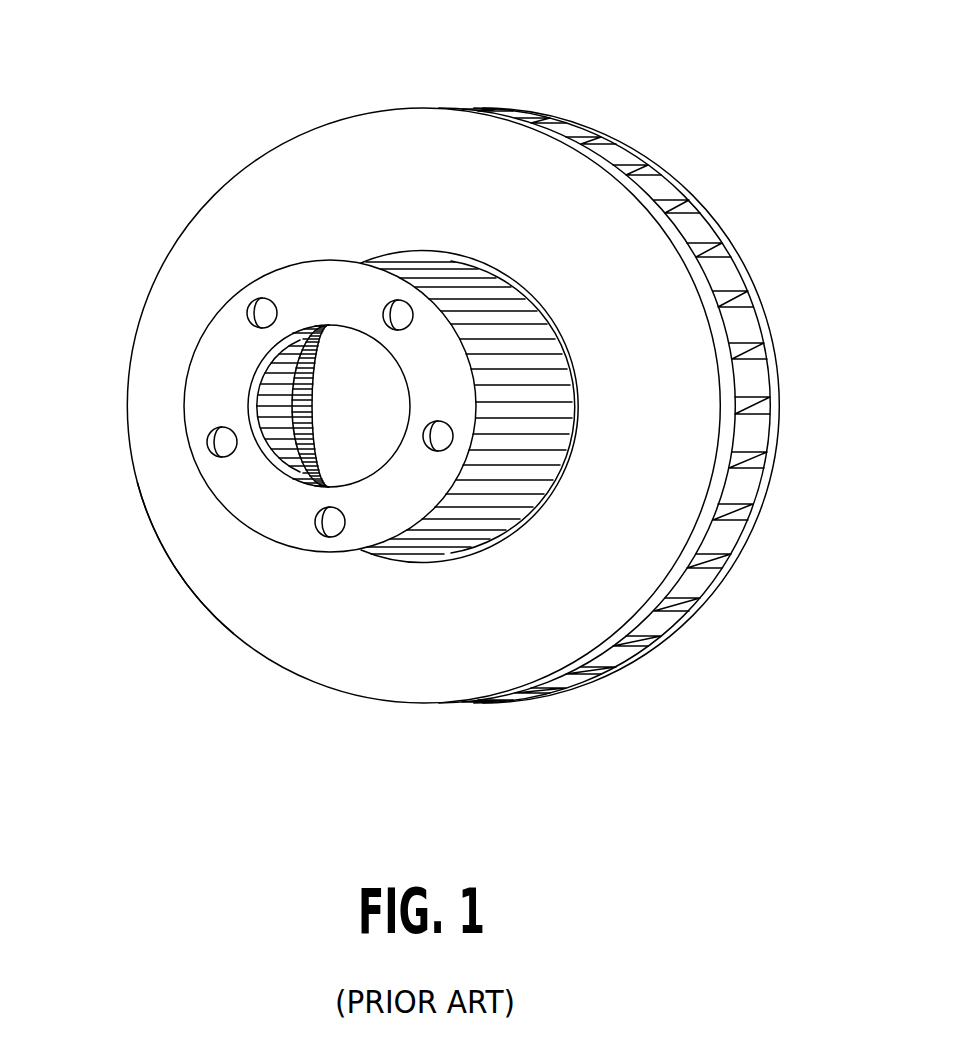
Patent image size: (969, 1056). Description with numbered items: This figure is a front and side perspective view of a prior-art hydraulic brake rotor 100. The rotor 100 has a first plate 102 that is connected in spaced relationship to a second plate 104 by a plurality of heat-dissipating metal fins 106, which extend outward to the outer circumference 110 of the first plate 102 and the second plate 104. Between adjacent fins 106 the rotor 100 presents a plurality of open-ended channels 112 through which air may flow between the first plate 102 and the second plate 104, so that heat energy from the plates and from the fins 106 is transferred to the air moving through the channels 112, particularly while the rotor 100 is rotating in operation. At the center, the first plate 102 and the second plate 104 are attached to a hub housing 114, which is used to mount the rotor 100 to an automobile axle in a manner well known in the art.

The rotor 100 is at (722, 144).
The first plate 102 is at (340, 158).
The second plate 104 is at (609, 139).
The heat-dissipating metal fins 106 is at (703, 256).
The outer circumference 110 is at (180, 617).
The open-ended channels 112 is at (745, 537).
The hub housing 114 is at (217, 350).